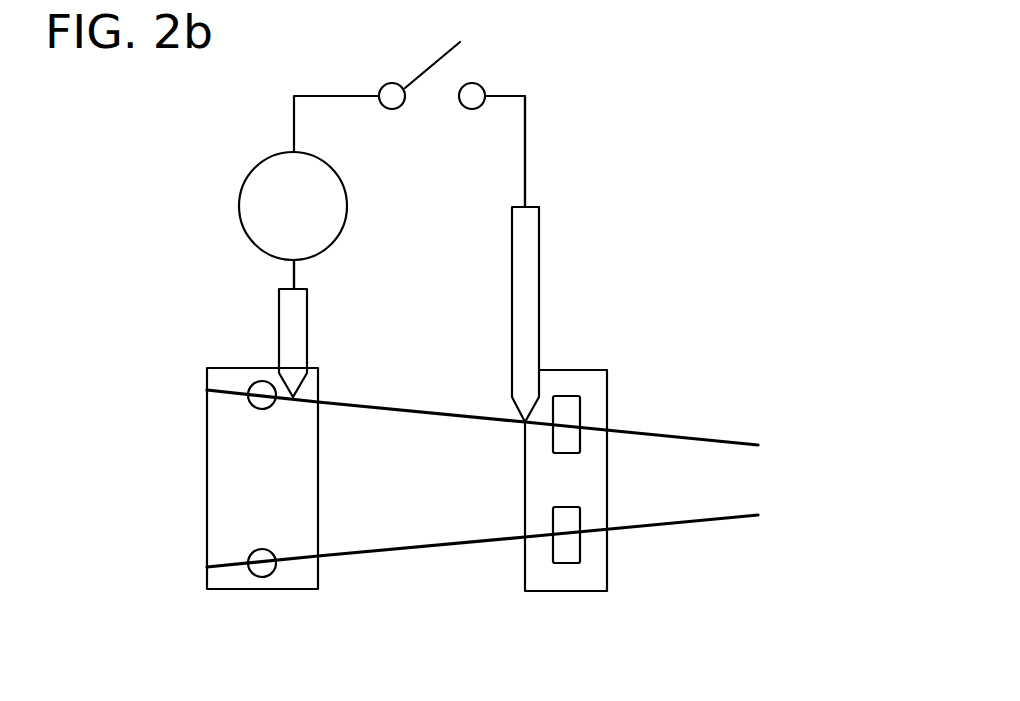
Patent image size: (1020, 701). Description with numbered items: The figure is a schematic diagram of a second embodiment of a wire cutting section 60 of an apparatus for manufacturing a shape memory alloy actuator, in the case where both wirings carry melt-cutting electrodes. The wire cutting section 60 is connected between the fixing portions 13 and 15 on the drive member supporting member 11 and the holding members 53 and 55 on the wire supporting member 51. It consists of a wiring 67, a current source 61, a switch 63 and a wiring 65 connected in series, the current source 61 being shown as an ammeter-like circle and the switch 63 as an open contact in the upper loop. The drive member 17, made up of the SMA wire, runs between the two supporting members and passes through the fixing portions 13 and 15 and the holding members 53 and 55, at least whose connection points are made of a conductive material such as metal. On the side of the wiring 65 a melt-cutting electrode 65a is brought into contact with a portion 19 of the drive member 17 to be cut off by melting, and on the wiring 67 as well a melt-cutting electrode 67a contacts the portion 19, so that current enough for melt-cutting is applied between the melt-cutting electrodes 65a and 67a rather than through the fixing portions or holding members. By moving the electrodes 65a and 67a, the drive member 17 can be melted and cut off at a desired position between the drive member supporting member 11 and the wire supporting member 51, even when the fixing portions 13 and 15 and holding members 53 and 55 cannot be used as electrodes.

The drive member supporting member 11 is at (580, 365).
The fixing portion 13 is at (580, 405).
The fixing portion 15 is at (580, 547).
The drive member 17 is at (670, 448).
The portion to be cut off by melting 19 is at (380, 408).
The wire supporting member 51 is at (230, 363).
The holding member 53 is at (262, 410).
The holding member 55 is at (262, 549).
The wire cutting section 60 is at (584, 92).
The current source 61 is at (348, 205).
The switch 63 is at (435, 62).
The wiring 65 is at (525, 148).
The melt-cutting electrode 65a is at (539, 230).
The wiring 67 is at (295, 273).
The melt-cutting electrode 67a is at (307, 313).